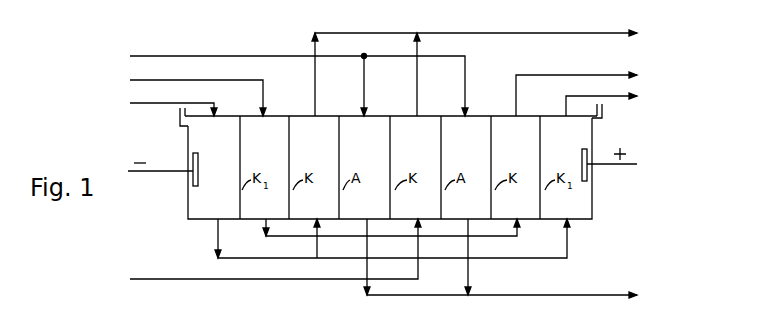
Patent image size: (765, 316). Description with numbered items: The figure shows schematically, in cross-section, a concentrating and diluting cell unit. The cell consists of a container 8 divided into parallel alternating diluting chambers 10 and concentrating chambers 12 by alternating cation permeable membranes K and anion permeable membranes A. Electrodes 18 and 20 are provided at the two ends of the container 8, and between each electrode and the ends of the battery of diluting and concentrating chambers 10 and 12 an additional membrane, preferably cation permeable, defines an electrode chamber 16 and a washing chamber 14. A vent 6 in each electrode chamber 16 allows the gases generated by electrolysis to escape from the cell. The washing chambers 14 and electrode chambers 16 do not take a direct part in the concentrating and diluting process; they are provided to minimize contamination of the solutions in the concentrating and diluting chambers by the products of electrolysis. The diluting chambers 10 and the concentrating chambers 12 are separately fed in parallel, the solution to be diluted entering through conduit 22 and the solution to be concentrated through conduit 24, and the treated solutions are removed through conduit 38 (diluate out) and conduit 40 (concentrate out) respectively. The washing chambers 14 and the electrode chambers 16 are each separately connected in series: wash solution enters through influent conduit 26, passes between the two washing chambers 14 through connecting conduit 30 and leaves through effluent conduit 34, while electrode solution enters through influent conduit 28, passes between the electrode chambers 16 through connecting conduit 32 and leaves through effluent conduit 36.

The vent 6 is at (178, 118).
The container 8 is at (583, 219).
The diluting chamber 10 is at (323, 144).
The concentrating chamber 12 is at (373, 144).
The washing chamber 14 is at (273, 144).
The electrode chamber 16 is at (223, 144).
The electrode 18 is at (590, 179).
The electrode 20 is at (192, 182).
The conduit 22 is at (180, 280).
The conduit 24 is at (187, 56).
The influent conduit 26 is at (172, 80).
The influent conduit 28 is at (150, 103).
The connecting conduit 30 is at (301, 237).
The connecting conduit 32 is at (276, 259).
The effluent conduit 34 is at (540, 75).
The effluent conduit 36 is at (571, 96).
The conduit 38 is at (543, 33).
The conduit 40 is at (423, 295).